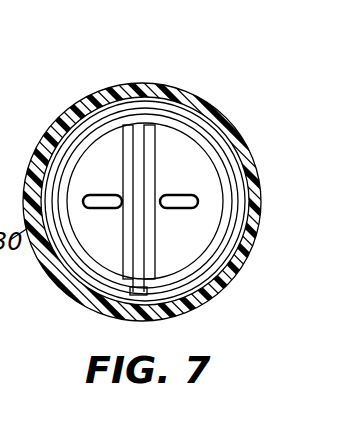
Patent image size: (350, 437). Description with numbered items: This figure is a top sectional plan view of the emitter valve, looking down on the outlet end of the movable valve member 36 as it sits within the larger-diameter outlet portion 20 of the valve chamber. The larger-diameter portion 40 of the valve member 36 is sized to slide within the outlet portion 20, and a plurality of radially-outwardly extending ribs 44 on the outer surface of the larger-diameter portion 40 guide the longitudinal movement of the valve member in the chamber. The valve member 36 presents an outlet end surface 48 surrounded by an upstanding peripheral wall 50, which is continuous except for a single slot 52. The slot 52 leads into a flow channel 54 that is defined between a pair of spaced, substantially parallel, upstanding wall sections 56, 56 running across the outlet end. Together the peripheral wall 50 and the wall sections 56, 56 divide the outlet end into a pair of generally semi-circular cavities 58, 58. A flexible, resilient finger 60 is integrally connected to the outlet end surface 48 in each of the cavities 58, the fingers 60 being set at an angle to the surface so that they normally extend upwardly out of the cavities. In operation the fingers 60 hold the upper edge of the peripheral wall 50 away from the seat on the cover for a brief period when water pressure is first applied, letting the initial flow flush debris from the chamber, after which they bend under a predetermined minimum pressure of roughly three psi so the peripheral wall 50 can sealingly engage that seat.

The outlet portion 20 is at (243, 224).
The valve member 36 is at (72, 265).
The larger-diameter portion 40 is at (210, 258).
The ribs 44 is at (62, 136).
The outlet end surface 48 is at (110, 244).
The peripheral wall 50 is at (236, 160).
The slot 52 is at (170, 308).
The flow channel 54 is at (140, 128).
The wall sections 56 is at (121, 140).
The semi-circular cavities 58 is at (97, 145).
The resilient fingers 60 is at (103, 197).